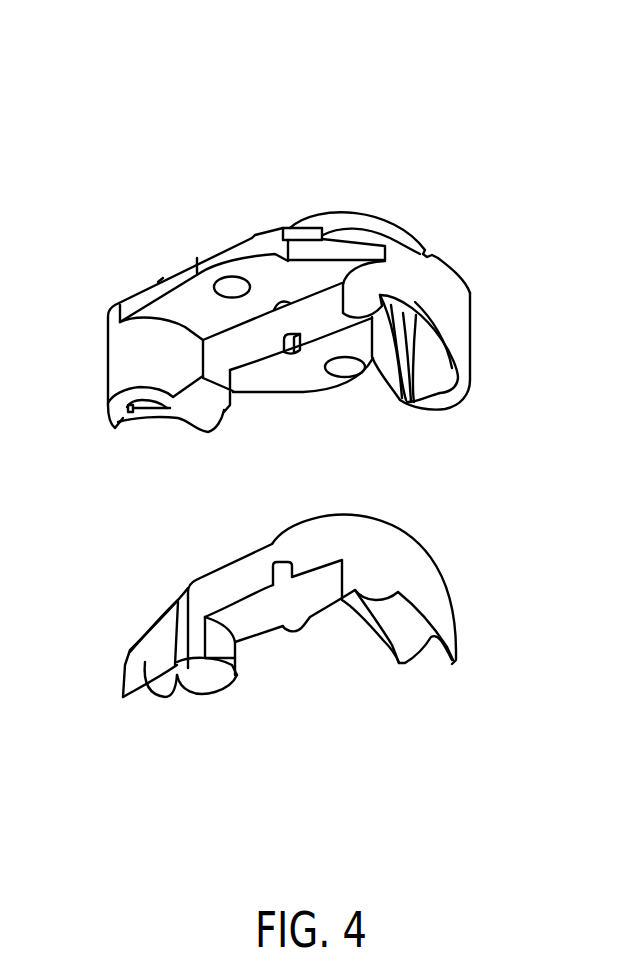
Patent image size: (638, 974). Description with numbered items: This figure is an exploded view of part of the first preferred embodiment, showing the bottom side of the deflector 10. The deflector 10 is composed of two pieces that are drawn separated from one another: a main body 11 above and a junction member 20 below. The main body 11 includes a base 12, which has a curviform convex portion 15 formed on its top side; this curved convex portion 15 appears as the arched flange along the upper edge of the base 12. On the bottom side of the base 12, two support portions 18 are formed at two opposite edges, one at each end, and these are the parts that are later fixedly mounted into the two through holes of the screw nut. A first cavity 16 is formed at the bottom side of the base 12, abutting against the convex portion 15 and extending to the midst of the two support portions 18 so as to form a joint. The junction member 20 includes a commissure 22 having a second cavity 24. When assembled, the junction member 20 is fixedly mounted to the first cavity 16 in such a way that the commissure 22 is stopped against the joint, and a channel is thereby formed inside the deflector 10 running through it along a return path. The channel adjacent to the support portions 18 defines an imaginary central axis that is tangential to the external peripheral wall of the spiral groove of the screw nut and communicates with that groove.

The deflector 10 is at (461, 97).
The main body 11 is at (251, 210).
The base 12 is at (215, 255).
The curviform convex portion 15 is at (352, 210).
The first cavity 16 is at (262, 352).
The support portions 18 is at (107, 400).
The junction member 20 is at (190, 720).
The commissure 22 is at (130, 648).
The second cavity 24 is at (143, 658).